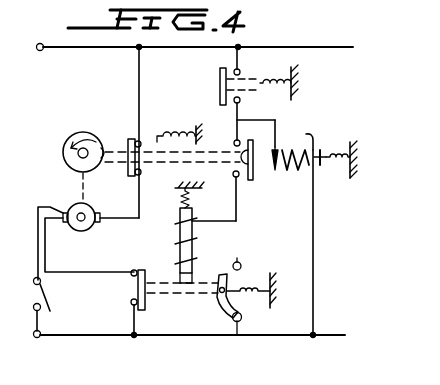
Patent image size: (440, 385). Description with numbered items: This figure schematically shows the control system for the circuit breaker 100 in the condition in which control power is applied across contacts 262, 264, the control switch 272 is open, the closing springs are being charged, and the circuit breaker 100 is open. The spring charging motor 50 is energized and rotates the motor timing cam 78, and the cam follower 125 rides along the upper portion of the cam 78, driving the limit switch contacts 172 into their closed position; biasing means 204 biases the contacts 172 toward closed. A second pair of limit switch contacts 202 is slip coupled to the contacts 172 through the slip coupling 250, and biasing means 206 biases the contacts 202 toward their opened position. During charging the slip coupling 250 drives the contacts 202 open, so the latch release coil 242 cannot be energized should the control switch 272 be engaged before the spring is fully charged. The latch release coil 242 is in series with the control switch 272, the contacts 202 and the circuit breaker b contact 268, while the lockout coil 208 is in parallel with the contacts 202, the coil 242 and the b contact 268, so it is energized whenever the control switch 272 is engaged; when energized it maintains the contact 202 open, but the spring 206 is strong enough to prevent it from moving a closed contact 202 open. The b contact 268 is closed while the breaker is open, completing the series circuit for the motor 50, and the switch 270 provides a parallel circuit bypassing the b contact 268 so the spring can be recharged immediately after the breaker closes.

The control power contact 262 is at (41, 51).
The control power contact 264 is at (39, 338).
The motor timing cam 78 is at (70, 133).
The cam follower 125 is at (113, 142).
The limit switch contacts 172 is at (150, 140).
The biasing means 204 is at (178, 135).
The slip coupling 250 is at (156, 166).
The latch release coil 242 is at (193, 242).
The second limit switch contacts 202 is at (255, 143).
The control switch 272 is at (218, 74).
The lockout coil 208 is at (307, 141).
The biasing means 206 is at (334, 152).
The spring charging motor 50 is at (86, 231).
The switch 270 is at (48, 293).
The b contact 268 is at (133, 290).
The circuit breaker 100 is at (248, 282).